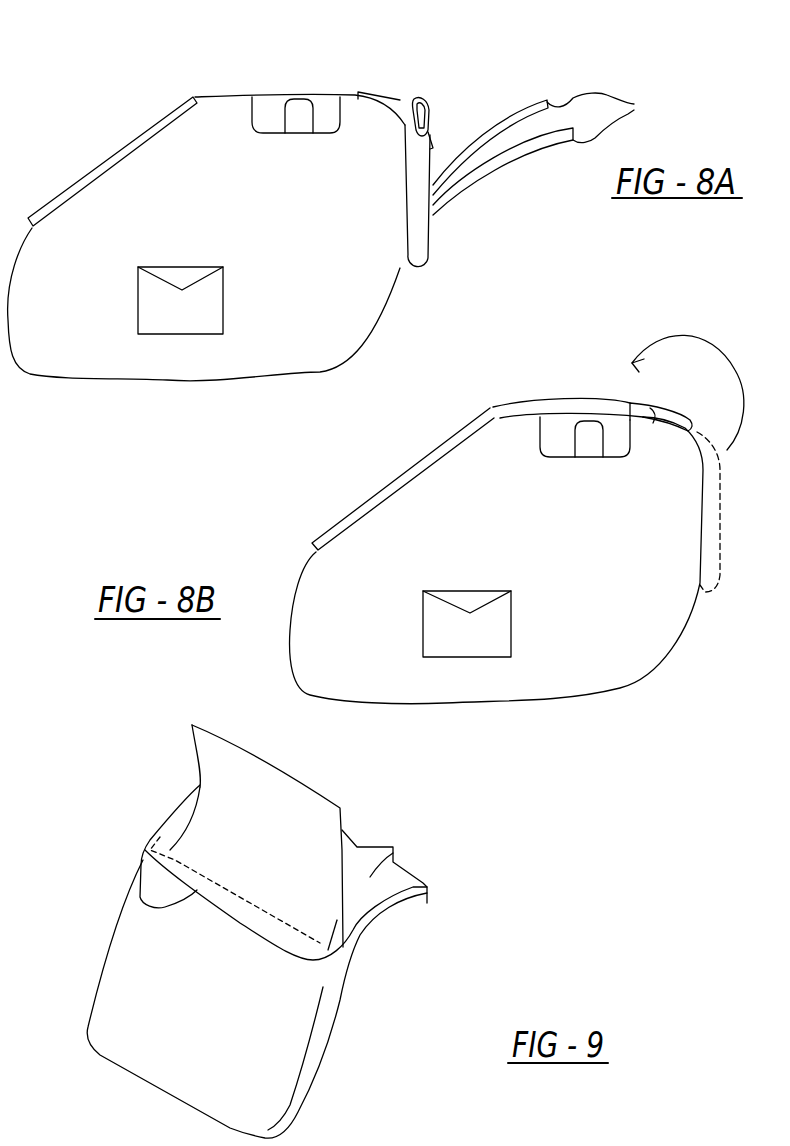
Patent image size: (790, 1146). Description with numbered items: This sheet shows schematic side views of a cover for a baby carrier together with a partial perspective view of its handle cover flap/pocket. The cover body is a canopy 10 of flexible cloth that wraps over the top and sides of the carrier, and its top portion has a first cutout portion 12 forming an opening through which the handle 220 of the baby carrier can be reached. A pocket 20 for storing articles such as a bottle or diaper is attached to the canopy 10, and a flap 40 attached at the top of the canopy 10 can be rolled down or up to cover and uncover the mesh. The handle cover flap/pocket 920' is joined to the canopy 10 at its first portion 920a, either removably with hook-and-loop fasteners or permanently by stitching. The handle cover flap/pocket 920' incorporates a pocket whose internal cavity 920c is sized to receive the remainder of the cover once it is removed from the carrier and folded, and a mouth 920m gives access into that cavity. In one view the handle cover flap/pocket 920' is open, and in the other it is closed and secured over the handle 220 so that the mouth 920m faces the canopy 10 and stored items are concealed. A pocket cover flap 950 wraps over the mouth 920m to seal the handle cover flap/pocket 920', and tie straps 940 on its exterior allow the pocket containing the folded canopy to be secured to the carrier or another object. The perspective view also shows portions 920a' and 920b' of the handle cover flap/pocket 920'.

In FIG. 8A, the canopy 10 is at (355, 267).
In FIG. 8B, the canopy 10 is at (647, 590).
In FIG. 8A, the first cutout portion 12 is at (272, 107).
In FIG. 8B, the first cutout portion 12 is at (585, 437).
In FIG. 8A, the pocket 20 is at (170, 318).
In FIG. 8B, the pocket 20 is at (453, 640).
In FIG. 8A, the flap 40 is at (90, 173).
In FIG. 8B, the flap 40 is at (377, 490).
In FIG. 8A, the handle 220 is at (296, 107).
In FIG. 8B, the handle 220 is at (587, 433).
In FIG. 8A, the handle cover flap/pocket 920' is at (482, 196).
In FIG. 8B, the handle cover flap/pocket 920' is at (561, 362).
In FIG. 9, the handle cover flap/pocket 920' is at (219, 987).
In FIG. 9, the first portion of the handle cover flap/pocket 920a is at (441, 857).
In FIG. 8A, the zipper flap 920a' is at (391, 56).
In FIG. 8B, the zipper flap 920a' is at (700, 459).
In FIG. 8A, the pocket bottom 920b' is at (478, 276).
In FIG. 8B, the pocket bottom 920b' is at (453, 390).
In FIG. 9, the pocket bottom 920b' is at (339, 1058).
In FIG. 9, the internal cavity 920c is at (288, 934).
In FIG. 8A, the mouth 920m is at (435, 105).
In FIG. 9, the mouth 920m is at (130, 887).
In FIG. 8A, the tie straps 940 is at (607, 116).
In FIG. 8A, the pocket cover flap 950 is at (423, 100).
In FIG. 8B, the pocket cover flap 950 is at (650, 410).
In FIG. 9, the pocket cover flap 950 is at (230, 767).